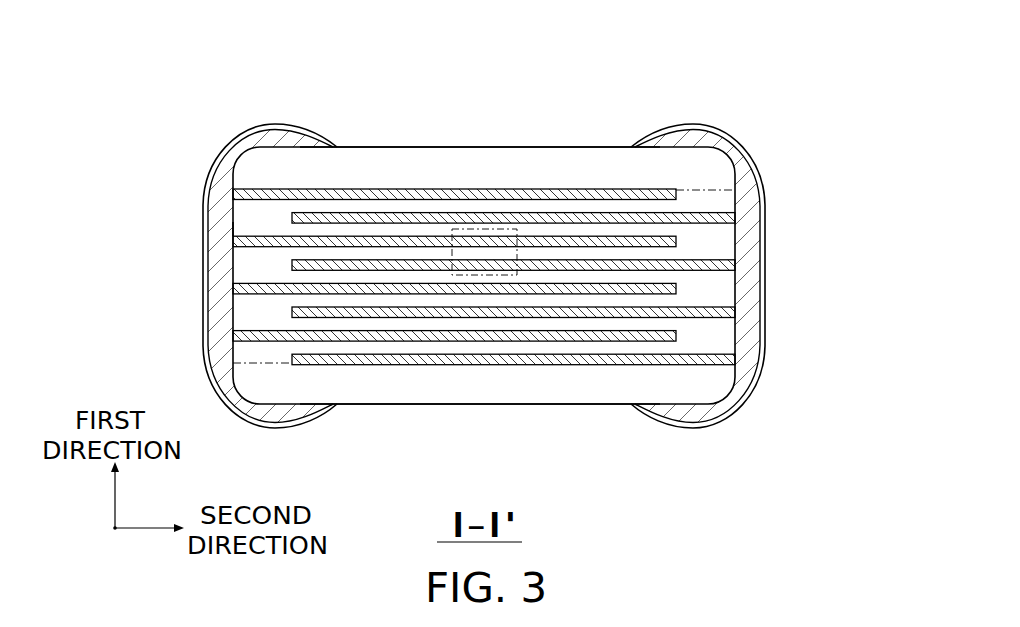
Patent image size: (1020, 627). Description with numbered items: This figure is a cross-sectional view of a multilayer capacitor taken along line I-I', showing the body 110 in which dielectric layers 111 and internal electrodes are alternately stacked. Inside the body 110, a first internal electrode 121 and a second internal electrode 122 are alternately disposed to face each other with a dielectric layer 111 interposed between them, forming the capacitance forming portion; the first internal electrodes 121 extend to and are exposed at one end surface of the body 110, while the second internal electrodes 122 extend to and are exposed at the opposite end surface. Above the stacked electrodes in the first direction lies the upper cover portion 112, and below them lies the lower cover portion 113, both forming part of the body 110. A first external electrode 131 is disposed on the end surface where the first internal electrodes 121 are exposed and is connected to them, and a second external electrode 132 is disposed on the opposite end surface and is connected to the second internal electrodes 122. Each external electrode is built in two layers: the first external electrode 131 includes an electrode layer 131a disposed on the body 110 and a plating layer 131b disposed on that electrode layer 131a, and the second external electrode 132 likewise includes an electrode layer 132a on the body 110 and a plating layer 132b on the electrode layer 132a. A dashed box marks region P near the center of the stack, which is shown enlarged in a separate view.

The body 110 is at (496, 147).
The dielectric layer 111 is at (372, 228).
The upper cover portion 112 is at (438, 160).
The lower cover portion 113 is at (443, 387).
The first internal electrode 121 is at (557, 190).
The second internal electrode 122 is at (578, 216).
The first external electrode 131 is at (203, 276).
The electrode layer 131a is at (216, 243).
The plating layer 131b is at (203, 297).
The second external electrode 132 is at (768, 276).
The electrode layer 132a is at (748, 229).
The plating layer 132b is at (766, 268).
The region P is at (484, 276).